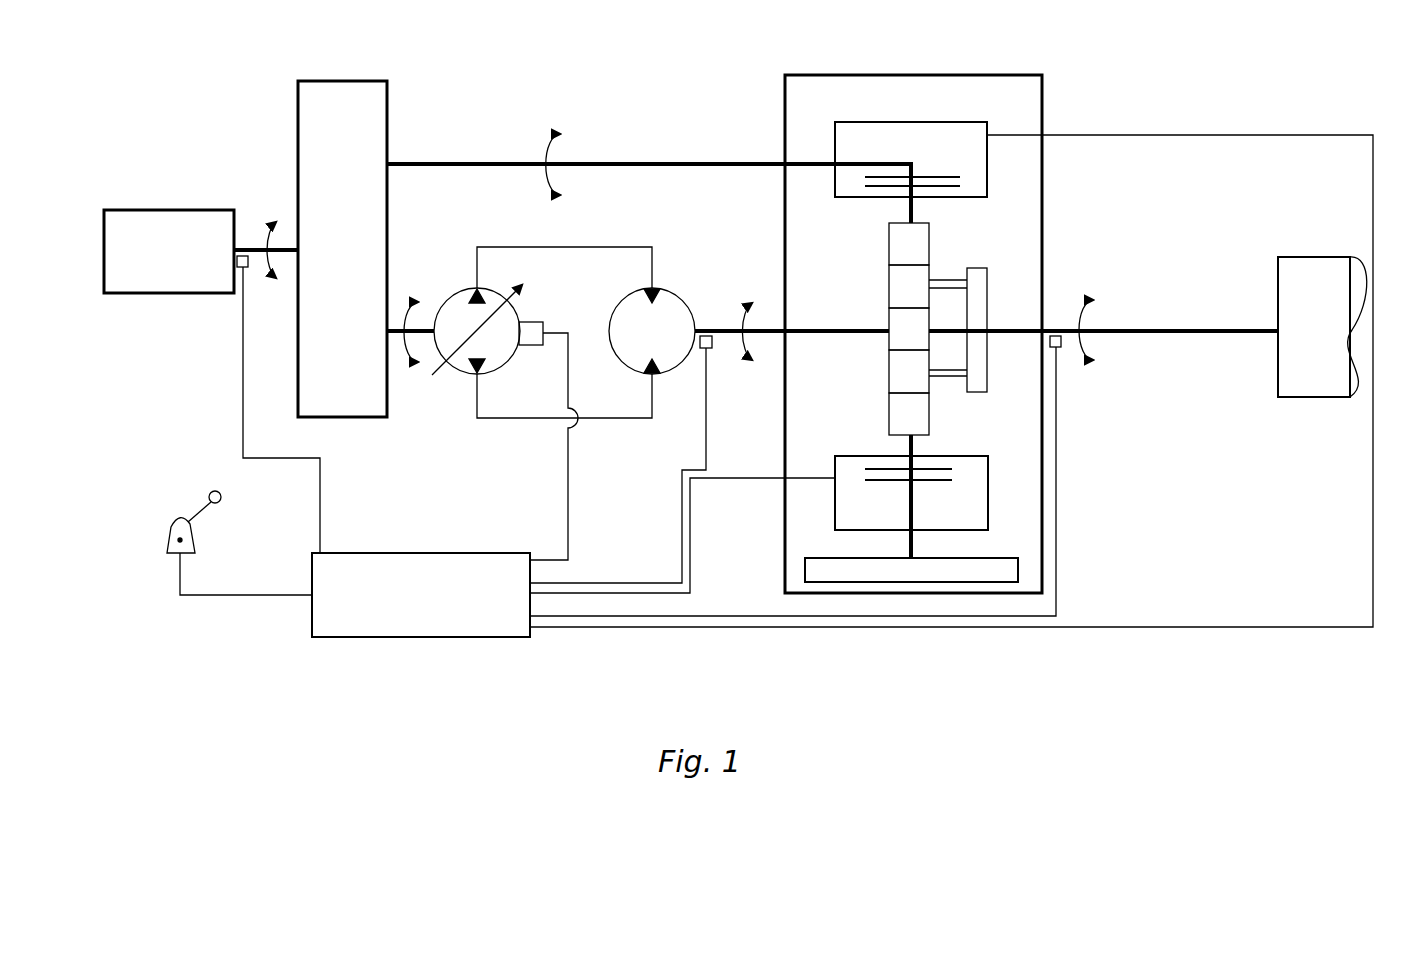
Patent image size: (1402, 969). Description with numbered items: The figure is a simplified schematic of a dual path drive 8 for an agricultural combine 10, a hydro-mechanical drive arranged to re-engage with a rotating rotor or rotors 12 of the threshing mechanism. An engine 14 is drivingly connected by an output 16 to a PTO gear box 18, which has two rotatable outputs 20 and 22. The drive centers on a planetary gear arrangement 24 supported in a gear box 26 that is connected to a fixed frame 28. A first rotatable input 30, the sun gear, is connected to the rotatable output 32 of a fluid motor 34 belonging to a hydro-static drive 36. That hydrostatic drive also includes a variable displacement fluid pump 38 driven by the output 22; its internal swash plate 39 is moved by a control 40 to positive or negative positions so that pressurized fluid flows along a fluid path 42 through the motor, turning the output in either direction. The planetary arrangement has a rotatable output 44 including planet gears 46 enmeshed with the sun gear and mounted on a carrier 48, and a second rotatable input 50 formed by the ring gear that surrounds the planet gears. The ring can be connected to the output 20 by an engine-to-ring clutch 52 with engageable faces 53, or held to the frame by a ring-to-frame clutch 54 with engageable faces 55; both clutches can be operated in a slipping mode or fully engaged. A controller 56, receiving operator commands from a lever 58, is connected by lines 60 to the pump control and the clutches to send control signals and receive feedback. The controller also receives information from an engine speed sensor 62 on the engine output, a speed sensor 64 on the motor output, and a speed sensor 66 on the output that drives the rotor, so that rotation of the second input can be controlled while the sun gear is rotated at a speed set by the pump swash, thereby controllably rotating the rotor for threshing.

The dual path drive 8 is at (366, 657).
The agricultural combine 10 is at (1256, 670).
The rotor or rotors 12 is at (1323, 397).
The engine 14 is at (155, 210).
The output 16 is at (248, 248).
The PTO gear box 18 is at (343, 81).
The output 20 is at (660, 162).
The output 22 is at (410, 360).
The planetary gear arrangement 24 is at (886, 243).
The gear box 26 is at (1042, 75).
The fixed frame 28 is at (1018, 572).
The first rotatable input 30 is at (889, 312).
The rotatable output 32 is at (772, 318).
The fluid motor 34 is at (684, 290).
The hydro-static drive 36 is at (594, 245).
The variable displacement fluid pump 38 is at (452, 292).
The swash plate 39 is at (442, 370).
The control 40 is at (543, 322).
The fluid path 42 is at (650, 250).
The rotatable output 44 is at (1048, 305).
The planet gears 46 is at (933, 280).
The carrier 48 is at (987, 372).
The second rotatable input 50 is at (889, 226).
The engine-to-ring clutch 52 is at (968, 122).
The engageable faces 53 is at (962, 179).
The ring-to-frame clutch 54 is at (988, 466).
The engageable faces 55 is at (952, 470).
The controller 56 is at (522, 640).
The lever 58 is at (170, 560).
The lines 60 is at (243, 423).
The engine speed sensor 62 is at (247, 268).
The speed sensor 64 is at (712, 350).
The speed sensor 66 is at (1062, 350).